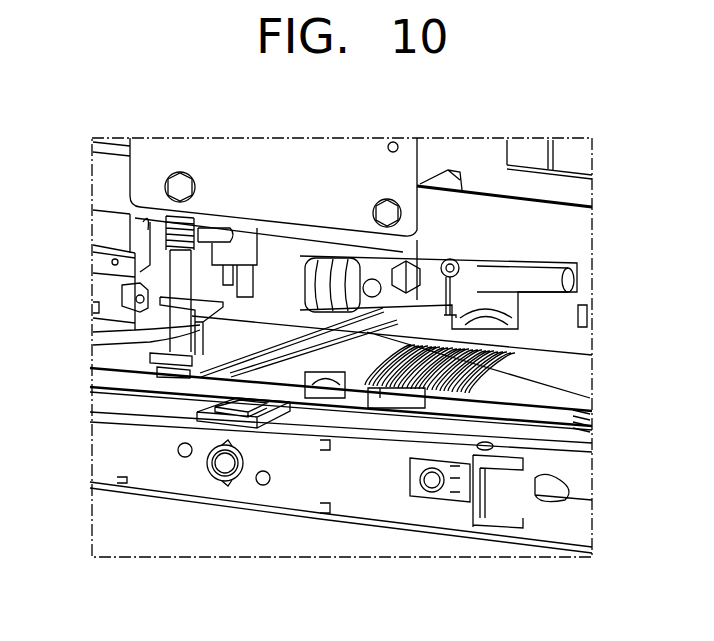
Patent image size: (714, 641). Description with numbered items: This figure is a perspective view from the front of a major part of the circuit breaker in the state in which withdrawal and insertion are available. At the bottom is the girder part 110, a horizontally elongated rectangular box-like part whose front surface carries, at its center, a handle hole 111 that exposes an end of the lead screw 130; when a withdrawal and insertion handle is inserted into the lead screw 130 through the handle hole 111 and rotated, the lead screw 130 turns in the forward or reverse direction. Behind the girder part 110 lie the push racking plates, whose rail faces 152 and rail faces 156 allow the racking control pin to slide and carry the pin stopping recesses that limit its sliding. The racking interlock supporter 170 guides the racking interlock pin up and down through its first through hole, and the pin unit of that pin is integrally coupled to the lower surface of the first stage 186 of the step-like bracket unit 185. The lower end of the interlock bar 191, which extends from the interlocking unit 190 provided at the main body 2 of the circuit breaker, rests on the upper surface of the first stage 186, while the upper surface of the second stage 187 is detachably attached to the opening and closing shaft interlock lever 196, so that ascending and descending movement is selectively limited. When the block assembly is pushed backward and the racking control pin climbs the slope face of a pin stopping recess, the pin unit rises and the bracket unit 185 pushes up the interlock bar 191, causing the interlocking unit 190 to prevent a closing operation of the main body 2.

The main body of the circuit breaker 2 is at (136, 179).
The opening and closing shaft interlock lever 196 is at (212, 250).
The interlock bar 191 is at (173, 282).
The second stage 187 is at (122, 297).
The bracket unit 185 is at (188, 331).
The first stage 186 is at (150, 353).
The racking interlock supporter 170 is at (182, 371).
The rail faces 156 is at (218, 386).
The rail faces 152 is at (215, 410).
The interlocking unit 190 is at (417, 298).
The lead screw 130 is at (397, 388).
The girder part 110 is at (110, 452).
The handle hole 111 is at (220, 465).